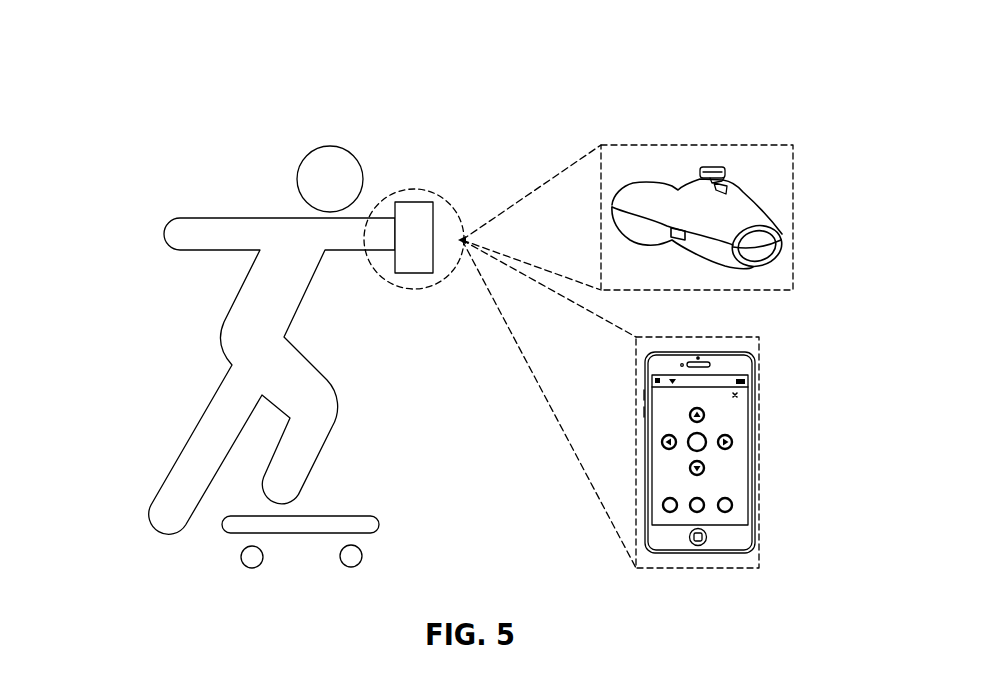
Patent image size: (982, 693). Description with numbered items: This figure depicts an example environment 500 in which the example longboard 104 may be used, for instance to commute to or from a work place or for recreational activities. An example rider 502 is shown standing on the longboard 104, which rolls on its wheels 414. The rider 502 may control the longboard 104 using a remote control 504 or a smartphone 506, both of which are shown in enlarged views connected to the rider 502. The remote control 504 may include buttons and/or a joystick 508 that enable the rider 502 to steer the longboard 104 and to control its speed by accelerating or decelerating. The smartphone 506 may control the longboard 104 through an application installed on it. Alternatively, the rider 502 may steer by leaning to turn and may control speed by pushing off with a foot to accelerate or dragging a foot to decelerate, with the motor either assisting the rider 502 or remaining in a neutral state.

The environment 500 is at (179, 98).
The rider 502 is at (162, 232).
The remote control 504 is at (793, 175).
The smartphone 506 is at (759, 373).
The joystick 508 is at (713, 165).
The wheel 414 is at (240, 553).
The longboard 104 is at (317, 533).